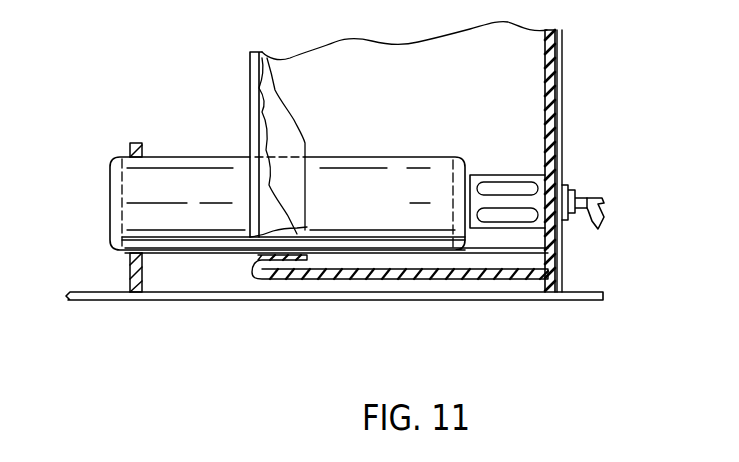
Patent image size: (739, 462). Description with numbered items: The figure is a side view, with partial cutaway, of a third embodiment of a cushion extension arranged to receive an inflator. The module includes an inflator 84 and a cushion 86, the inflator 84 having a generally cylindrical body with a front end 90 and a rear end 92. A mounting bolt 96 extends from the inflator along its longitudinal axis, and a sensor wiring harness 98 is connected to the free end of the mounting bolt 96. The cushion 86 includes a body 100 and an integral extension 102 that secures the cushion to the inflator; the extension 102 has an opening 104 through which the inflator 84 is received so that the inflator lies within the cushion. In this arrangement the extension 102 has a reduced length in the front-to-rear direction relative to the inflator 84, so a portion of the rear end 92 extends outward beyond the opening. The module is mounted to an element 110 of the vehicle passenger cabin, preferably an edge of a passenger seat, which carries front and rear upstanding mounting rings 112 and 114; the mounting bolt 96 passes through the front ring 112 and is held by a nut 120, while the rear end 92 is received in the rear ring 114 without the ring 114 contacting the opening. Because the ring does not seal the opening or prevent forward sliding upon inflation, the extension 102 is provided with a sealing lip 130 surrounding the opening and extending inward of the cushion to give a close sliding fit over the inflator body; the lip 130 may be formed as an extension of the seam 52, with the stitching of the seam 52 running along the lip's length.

The seam 52 is at (267, 72).
The inflator 84 is at (385, 208).
The cushion 86 is at (397, 90).
The front end 90 is at (467, 168).
The rear end 92 is at (110, 209).
The mounting bolt 96 is at (587, 192).
The sensor wiring harness 98 is at (604, 217).
The body 100 is at (557, 30).
The extension 102 is at (555, 117).
The opening 104 is at (250, 186).
The element 110 is at (210, 301).
The front mounting ring 112 is at (565, 270).
The rear mounting ring 114 is at (136, 150).
The nut 120 is at (572, 190).
The sealing lip 130 is at (285, 180).